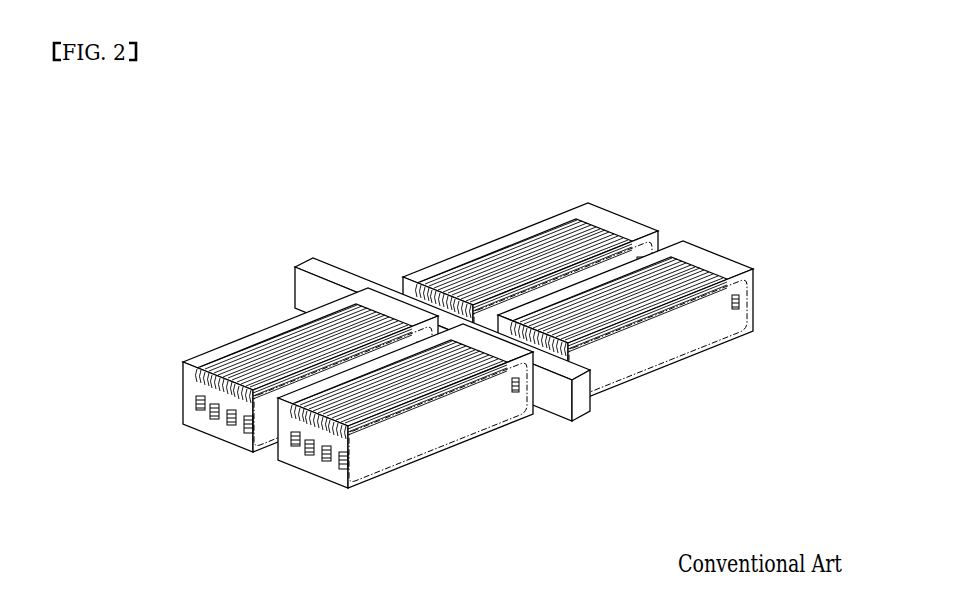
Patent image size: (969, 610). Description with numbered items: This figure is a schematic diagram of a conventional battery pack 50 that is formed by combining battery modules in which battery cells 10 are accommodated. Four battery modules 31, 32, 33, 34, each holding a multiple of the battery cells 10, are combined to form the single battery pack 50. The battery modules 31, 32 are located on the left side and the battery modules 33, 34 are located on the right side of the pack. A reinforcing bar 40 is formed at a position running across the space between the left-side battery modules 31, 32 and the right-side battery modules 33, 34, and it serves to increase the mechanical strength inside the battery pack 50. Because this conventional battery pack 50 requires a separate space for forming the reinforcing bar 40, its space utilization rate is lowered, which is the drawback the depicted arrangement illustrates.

The battery cell 10 is at (445, 440).
The battery module 31 is at (383, 422).
The battery module 32 is at (210, 352).
The battery module 33 is at (754, 297).
The battery module 34 is at (621, 216).
The reinforcing bar 40 is at (595, 404).
The battery pack 50 is at (154, 136).